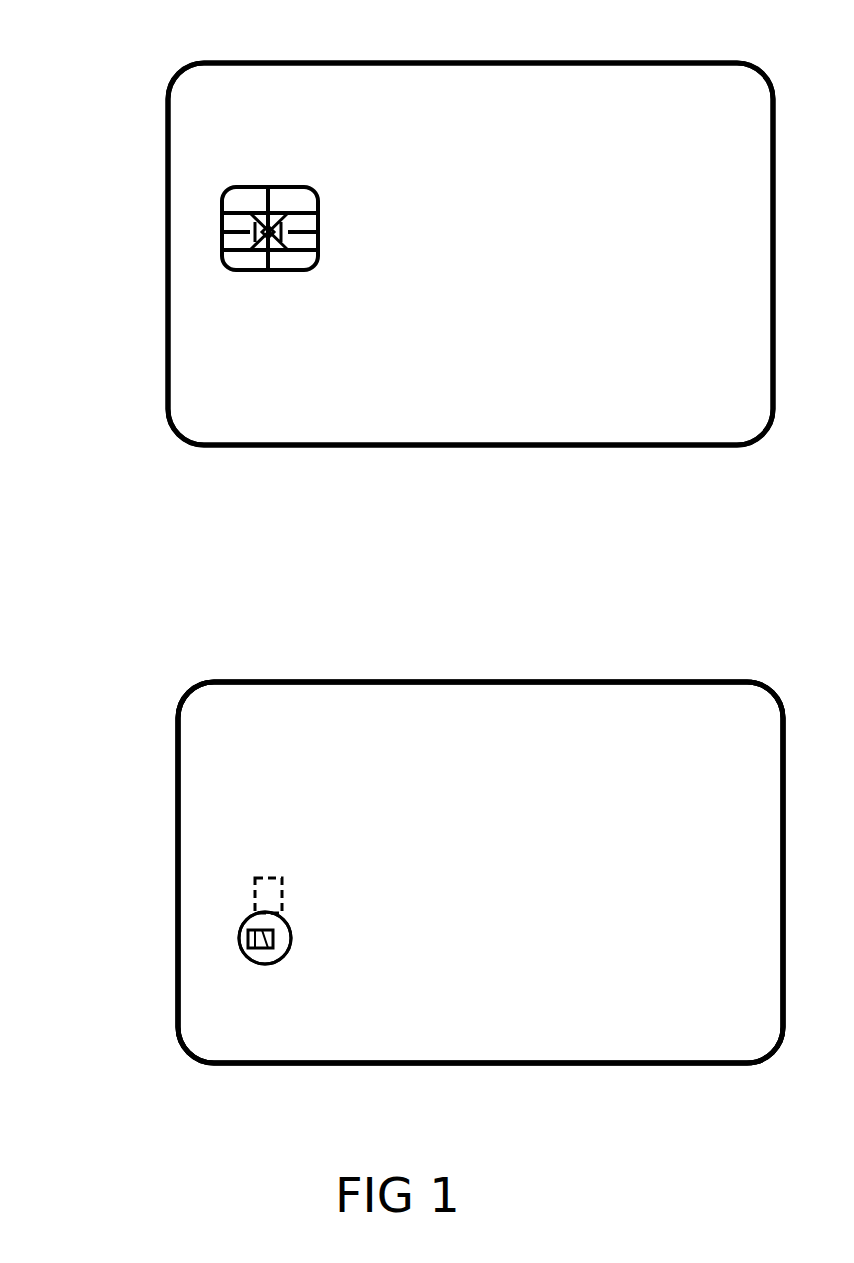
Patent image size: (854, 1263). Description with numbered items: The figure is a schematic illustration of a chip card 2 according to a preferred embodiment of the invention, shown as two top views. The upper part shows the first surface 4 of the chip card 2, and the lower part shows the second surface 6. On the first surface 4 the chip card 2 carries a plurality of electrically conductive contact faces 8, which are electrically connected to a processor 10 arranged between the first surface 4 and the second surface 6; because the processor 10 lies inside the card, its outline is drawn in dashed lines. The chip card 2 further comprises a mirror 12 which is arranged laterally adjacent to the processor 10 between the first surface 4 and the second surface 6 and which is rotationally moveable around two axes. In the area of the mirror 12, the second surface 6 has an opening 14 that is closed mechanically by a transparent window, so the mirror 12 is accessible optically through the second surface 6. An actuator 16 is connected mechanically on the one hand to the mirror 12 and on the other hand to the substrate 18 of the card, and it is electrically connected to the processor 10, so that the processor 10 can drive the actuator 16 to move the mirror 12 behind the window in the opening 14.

The chip card 2 is at (168, 385).
The first surface 4 is at (425, 122).
The second surface 6 is at (392, 750).
The electrically conductive contact faces 8 is at (237, 198).
The processor 10 is at (292, 249).
The mirror 12 is at (252, 958).
The opening 14 is at (288, 958).
The actuator 16 is at (240, 936).
The substrate 18 is at (525, 767).